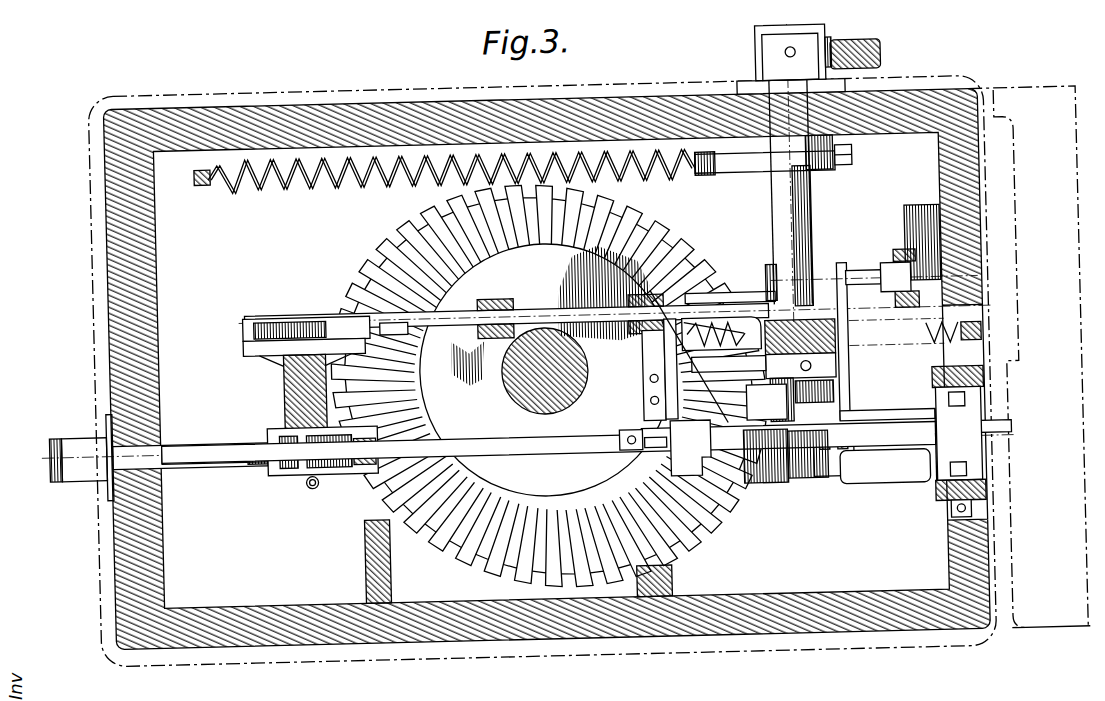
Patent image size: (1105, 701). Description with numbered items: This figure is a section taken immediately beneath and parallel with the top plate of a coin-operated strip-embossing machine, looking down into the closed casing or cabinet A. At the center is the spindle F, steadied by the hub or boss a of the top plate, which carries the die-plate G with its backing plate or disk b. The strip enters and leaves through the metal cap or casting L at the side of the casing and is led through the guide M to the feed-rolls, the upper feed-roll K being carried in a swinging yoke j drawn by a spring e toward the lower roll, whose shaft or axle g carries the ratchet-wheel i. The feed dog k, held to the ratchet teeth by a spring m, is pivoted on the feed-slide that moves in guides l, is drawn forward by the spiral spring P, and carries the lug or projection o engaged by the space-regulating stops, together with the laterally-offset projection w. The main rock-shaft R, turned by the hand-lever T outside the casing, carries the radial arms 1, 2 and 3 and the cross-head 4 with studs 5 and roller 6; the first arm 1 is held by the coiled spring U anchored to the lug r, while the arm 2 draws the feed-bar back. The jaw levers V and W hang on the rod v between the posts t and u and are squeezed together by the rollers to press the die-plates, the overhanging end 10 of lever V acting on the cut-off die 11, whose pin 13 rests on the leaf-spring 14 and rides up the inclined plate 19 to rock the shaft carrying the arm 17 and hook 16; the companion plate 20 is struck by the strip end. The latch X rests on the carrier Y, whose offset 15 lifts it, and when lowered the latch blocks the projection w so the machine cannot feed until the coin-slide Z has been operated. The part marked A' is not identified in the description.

The casing or cabinet A is at (589, 370).
The die-plate G is at (549, 386).
The backing plate or disk b is at (546, 370).
The hub or boss a is at (551, 324).
The central spindle or axle F is at (575, 360).
The guides l is at (492, 299).
The feed dog or pawl k is at (244, 323).
The spring m is at (286, 316).
The lug or projection o is at (392, 319).
The ratchet-wheel i is at (238, 458).
The metal cap or casting L is at (78, 470).
The feed-roll K is at (290, 466).
The swinging frame or yoke j is at (345, 462).
The spring e is at (306, 494).
The guide M is at (518, 558).
The coiled or spiral spring U is at (328, 185).
The lug r is at (210, 179).
The radial arm 1 is at (752, 177).
The main rock-shaft R is at (814, 207).
The offset 15 is at (802, 272).
The hand-lever T is at (819, 44).
The projection w is at (768, 274).
The hook or detent 16 is at (840, 270).
The coin-slide Z is at (908, 222).
The shaft or axle g is at (900, 258).
The latch X is at (858, 280).
The carrier Y is at (885, 296).
The leaf-spring 14 is at (660, 370).
The radial arm 2 is at (722, 334).
The hatched block A' is at (801, 370).
The radial arm 3 is at (742, 376).
The spiral spring P is at (698, 356).
The overhanging outer end 10 is at (750, 404).
The double arm or cross-head 4 is at (815, 430).
The inclined bearing plate 20 is at (1002, 443).
The inclined bearing plate 19 is at (626, 452).
The pin or stem 13 is at (652, 450).
The cut-off die 11 is at (696, 479).
The laterally-projecting studs 5 is at (766, 468).
The roller 6 is at (814, 478).
The jaw or lever V is at (866, 474).
The jaw or lever W is at (890, 491).
The bracket or post u is at (942, 401).
The arm 17 is at (897, 343).
The bracket or post t is at (936, 508).
The axle or rod v is at (948, 522).